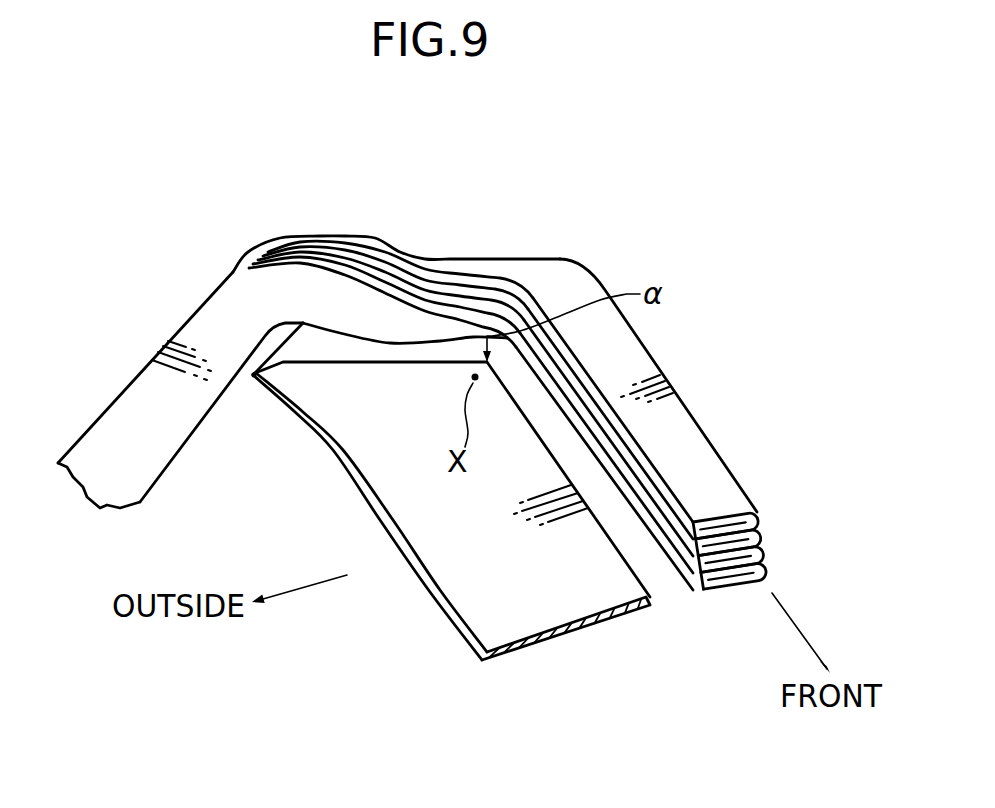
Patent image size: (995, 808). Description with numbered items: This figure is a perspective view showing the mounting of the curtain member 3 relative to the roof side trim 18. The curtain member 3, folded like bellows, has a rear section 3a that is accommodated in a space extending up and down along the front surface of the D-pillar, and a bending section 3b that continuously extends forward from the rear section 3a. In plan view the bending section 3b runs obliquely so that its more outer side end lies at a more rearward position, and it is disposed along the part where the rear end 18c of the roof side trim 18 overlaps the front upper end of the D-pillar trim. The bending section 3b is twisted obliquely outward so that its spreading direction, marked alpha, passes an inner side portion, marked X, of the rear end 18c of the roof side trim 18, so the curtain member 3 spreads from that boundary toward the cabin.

The curtain member 3 is at (712, 407).
The rear section of the curtain member 3a is at (123, 410).
The bending section of the curtain member 3b is at (493, 265).
The roof side trim 18 is at (427, 593).
The rear end of the roof side trim 18c is at (373, 378).